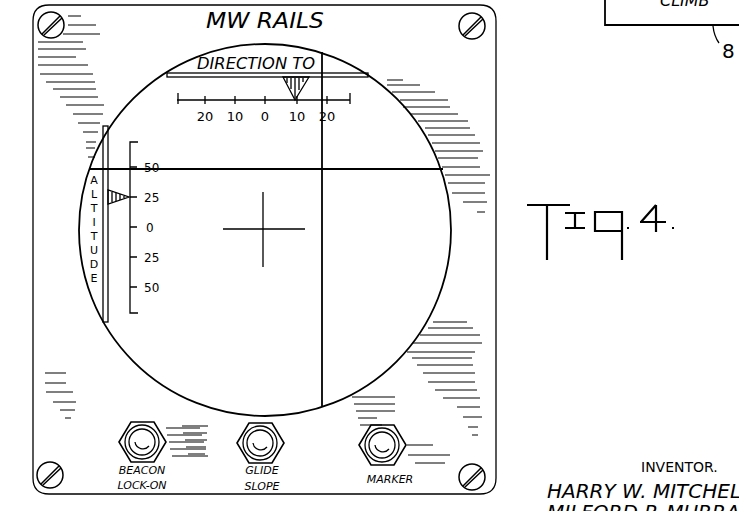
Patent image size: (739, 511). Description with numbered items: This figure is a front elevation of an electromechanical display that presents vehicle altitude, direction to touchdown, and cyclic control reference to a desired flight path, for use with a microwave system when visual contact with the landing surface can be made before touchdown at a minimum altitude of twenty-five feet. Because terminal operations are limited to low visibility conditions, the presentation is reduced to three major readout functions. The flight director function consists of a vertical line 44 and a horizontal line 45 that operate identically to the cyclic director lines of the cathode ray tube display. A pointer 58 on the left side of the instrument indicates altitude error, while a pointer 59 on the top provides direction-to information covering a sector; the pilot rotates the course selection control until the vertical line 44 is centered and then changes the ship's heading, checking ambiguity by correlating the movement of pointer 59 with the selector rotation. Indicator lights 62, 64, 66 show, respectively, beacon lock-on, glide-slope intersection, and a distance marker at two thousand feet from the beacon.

The pointer 59 is at (302, 79).
The pointer 58 is at (129, 198).
The horizontal line 45 is at (212, 172).
The vertical line 44 is at (323, 285).
The indicator light 62 is at (131, 438).
The indicator light 64 is at (268, 446).
The indicator light 66 is at (400, 438).